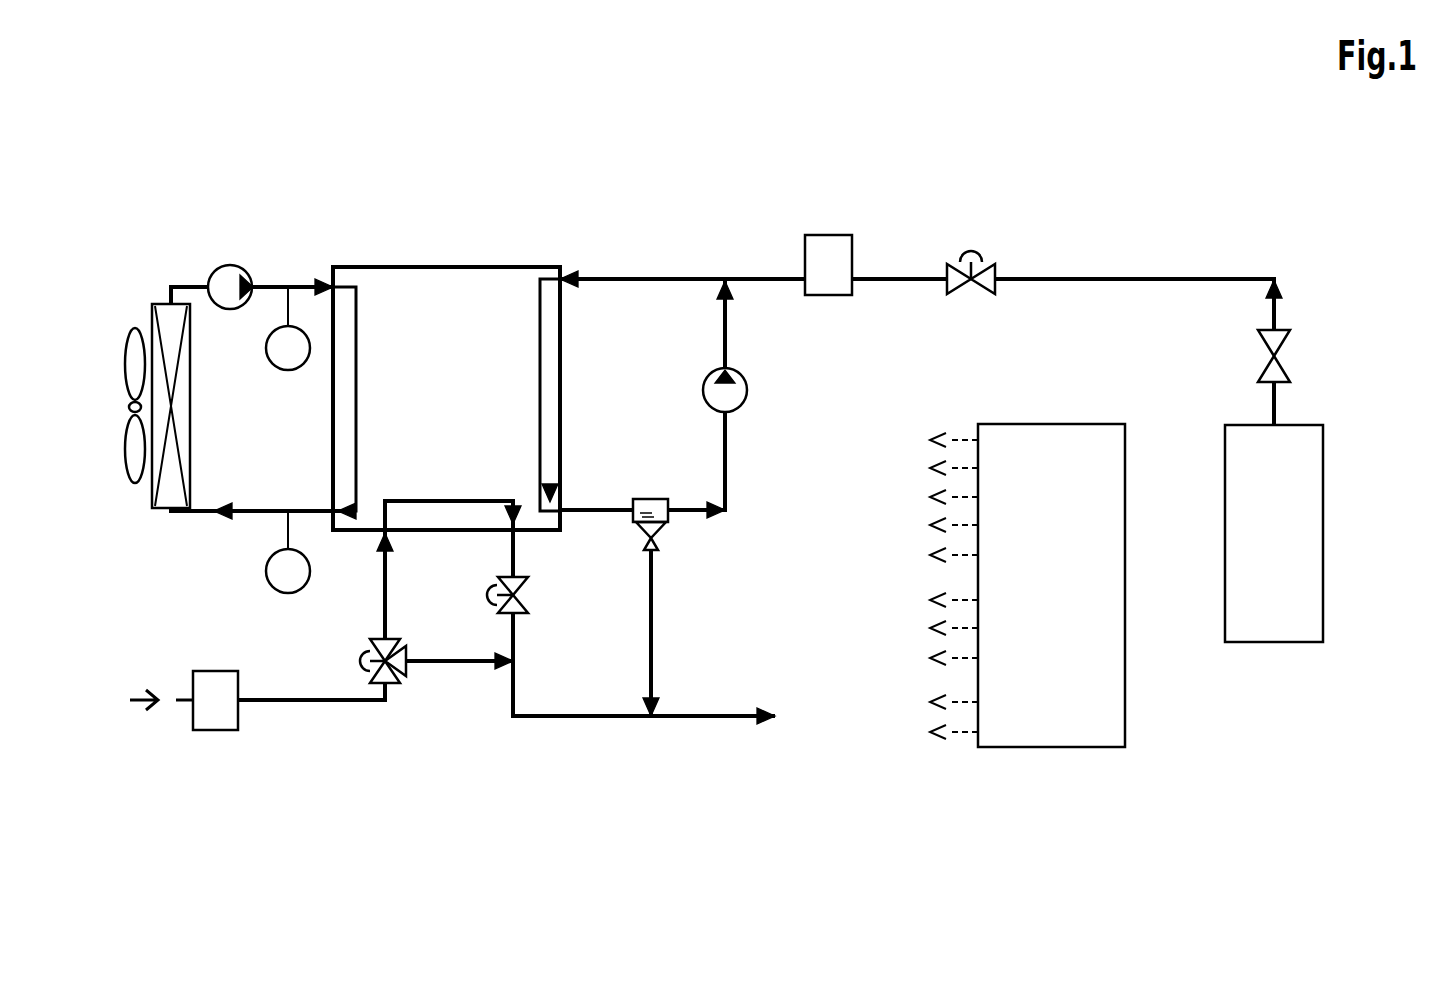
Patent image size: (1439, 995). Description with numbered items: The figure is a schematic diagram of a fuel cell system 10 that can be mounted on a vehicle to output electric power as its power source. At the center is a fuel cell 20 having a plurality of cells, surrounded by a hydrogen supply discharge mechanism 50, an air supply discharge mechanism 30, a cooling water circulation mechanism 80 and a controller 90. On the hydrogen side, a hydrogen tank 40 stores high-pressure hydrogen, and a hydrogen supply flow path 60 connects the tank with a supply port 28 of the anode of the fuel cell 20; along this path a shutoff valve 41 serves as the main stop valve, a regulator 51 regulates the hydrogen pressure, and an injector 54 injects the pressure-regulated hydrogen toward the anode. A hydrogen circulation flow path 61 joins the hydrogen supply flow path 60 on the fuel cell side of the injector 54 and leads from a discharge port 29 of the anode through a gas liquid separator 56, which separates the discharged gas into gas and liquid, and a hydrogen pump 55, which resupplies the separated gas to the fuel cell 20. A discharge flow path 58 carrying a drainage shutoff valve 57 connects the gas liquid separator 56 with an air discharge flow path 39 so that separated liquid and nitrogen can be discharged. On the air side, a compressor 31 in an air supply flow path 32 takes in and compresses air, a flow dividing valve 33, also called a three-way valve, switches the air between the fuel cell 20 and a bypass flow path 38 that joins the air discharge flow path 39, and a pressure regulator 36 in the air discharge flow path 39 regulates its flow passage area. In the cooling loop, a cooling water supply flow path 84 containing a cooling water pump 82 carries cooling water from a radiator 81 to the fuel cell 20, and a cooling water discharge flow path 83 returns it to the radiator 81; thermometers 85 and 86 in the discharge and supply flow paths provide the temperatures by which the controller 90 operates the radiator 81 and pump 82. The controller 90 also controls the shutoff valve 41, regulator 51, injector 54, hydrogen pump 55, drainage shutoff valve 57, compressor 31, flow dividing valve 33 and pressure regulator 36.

The fuel cell system 10 is at (1288, 178).
The fuel cell 20 is at (569, 379).
The supply port 28 is at (563, 290).
The discharge port 29 is at (565, 505).
The air supply discharge mechanism 30 is at (270, 742).
The compressor 31 is at (207, 671).
The air supply flow path 32 is at (302, 700).
The flow dividing valve 33 is at (392, 683).
The pressure regulator 36 is at (500, 585).
The bypass flow path 38 is at (447, 661).
The air discharge flow path 39 is at (573, 716).
The hydrogen tank 40 is at (1293, 425).
The shutoff valve 41 is at (1266, 362).
The hydrogen supply discharge mechanism 50 is at (1205, 262).
The regulator 51 is at (995, 268).
The injector 54 is at (826, 235).
The hydrogen pump 55 is at (748, 392).
The gas liquid separator 56 is at (662, 525).
The drainage shutoff valve 57 is at (657, 546).
The discharge flow path 58 is at (653, 640).
The hydrogen supply flow path 60 is at (1187, 280).
The hydrogen circulation flow path 61 is at (598, 512).
The cooling water circulation mechanism 80 is at (163, 258).
The radiator 81 is at (160, 303).
The cooling water pump 82 is at (230, 265).
The cooling water discharge flow path 83 is at (275, 511).
The cooling water supply flow path 84 is at (271, 287).
The thermometer 85 is at (267, 572).
The thermometer 86 is at (266, 350).
The controller 90 is at (1080, 424).